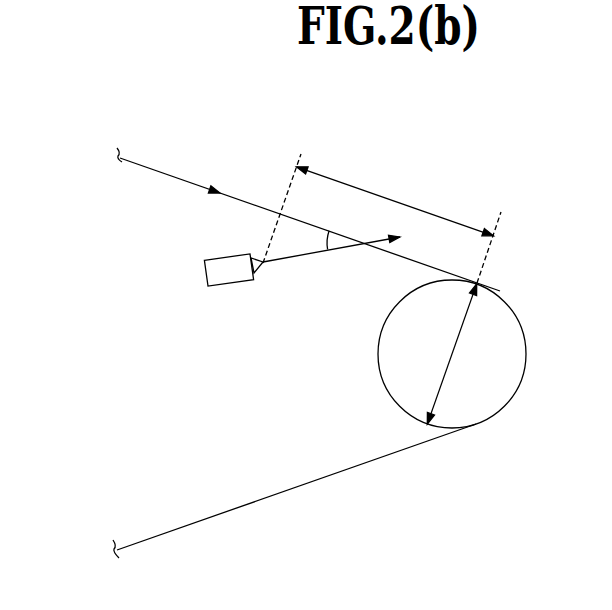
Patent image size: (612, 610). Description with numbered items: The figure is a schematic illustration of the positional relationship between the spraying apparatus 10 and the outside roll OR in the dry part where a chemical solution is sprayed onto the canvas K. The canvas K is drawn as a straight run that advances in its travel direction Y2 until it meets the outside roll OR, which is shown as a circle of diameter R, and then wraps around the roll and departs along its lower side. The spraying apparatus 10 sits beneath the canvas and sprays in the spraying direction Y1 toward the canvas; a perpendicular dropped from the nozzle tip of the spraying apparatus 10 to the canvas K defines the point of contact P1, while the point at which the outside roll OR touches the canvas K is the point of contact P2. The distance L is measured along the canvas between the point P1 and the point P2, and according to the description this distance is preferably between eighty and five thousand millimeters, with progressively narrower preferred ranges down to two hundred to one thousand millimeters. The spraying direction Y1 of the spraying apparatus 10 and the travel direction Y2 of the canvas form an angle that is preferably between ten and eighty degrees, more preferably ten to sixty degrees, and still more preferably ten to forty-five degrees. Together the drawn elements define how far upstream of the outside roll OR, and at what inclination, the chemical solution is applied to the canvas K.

The canvas K is at (153, 169).
The travel direction Y2 is at (206, 172).
The point of contact P1 is at (280, 214).
The distance L is at (395, 201).
The spraying direction Y1 is at (349, 242).
The spraying apparatus 10 is at (204, 270).
The point of contact P2 is at (480, 283).
The diameter R is at (447, 354).
The outside roll OR is at (487, 382).